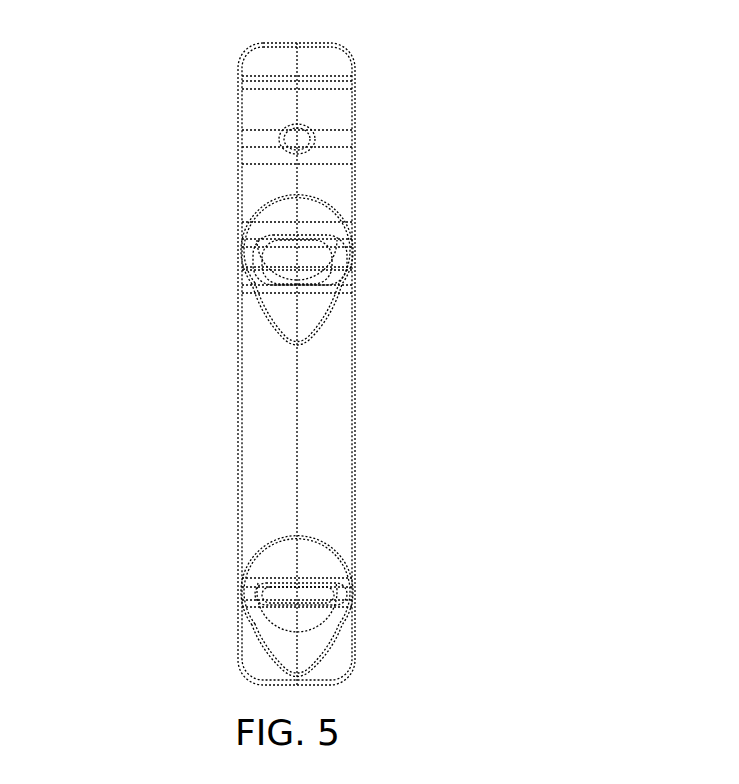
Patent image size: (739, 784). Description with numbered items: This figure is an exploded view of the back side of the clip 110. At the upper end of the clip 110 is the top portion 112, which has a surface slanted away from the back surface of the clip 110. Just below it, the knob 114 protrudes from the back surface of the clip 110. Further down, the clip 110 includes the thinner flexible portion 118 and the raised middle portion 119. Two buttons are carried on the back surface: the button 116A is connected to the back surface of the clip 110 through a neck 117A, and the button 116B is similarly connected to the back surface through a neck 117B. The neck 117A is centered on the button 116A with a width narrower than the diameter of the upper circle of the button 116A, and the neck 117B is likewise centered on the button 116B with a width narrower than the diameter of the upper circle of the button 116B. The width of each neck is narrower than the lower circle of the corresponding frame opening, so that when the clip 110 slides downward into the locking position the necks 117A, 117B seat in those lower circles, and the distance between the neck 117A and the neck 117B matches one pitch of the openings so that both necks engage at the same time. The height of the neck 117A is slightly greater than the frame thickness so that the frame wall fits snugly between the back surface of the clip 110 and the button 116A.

The clip 110 is at (135, 62).
The top portion 112 is at (313, 53).
The knob 114 is at (293, 137).
The button 116A is at (272, 220).
The button 116B is at (272, 566).
The neck 117A is at (281, 260).
The neck 117B is at (290, 607).
The flexible portion 118 is at (330, 187).
The middle portion 119 is at (333, 437).